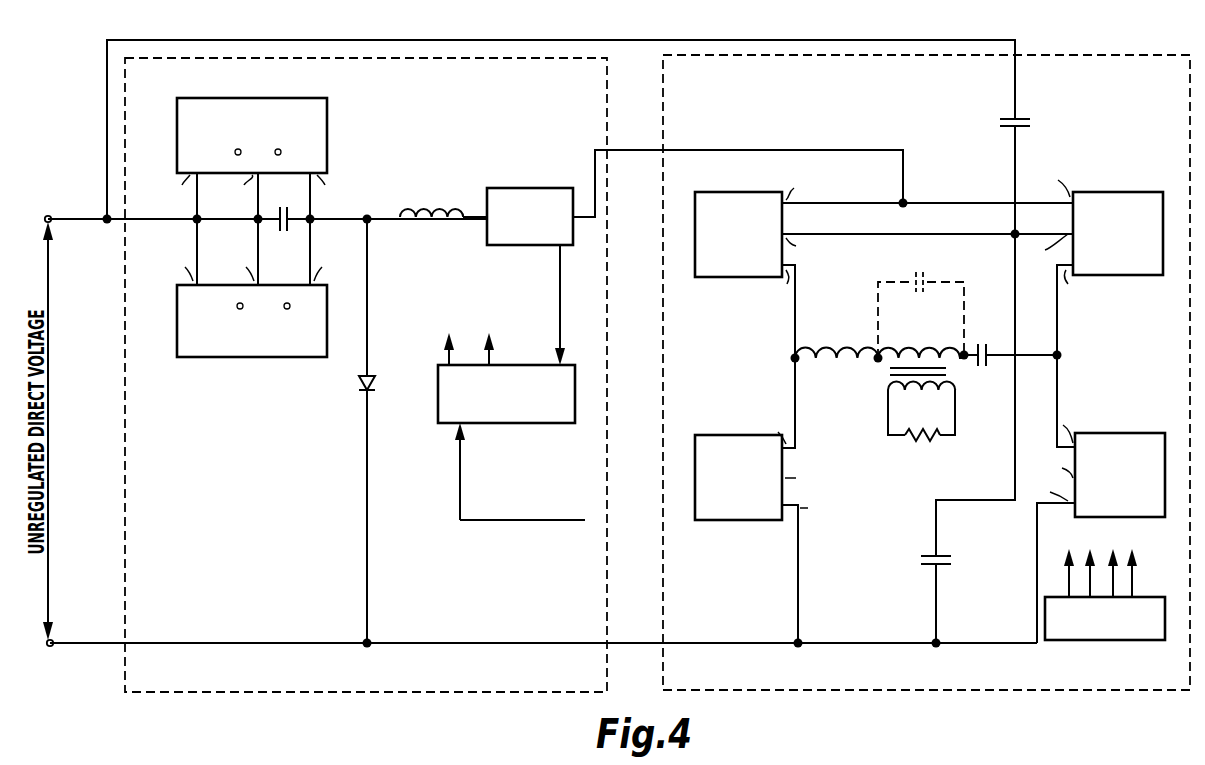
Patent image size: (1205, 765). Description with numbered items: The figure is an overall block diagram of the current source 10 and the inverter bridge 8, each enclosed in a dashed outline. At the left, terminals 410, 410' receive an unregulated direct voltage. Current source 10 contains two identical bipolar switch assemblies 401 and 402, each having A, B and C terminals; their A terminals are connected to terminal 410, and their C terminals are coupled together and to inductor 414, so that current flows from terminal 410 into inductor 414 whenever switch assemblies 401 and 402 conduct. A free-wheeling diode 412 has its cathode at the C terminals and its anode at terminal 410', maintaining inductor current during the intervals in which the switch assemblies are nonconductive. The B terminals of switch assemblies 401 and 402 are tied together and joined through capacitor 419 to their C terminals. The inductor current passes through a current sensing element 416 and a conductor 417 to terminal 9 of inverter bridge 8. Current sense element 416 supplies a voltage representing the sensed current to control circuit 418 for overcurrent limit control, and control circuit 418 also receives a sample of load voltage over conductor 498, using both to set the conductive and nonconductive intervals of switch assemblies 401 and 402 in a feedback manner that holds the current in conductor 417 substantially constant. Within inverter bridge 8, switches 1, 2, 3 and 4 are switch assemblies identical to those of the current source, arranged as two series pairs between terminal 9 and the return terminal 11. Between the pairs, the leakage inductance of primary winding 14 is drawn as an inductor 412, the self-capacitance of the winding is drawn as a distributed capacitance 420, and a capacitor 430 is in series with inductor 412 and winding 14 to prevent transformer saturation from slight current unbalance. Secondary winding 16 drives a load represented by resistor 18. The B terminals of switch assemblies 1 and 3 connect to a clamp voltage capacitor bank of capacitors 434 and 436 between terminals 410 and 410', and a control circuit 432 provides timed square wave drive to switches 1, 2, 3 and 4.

The inverter bridge 8 is at (926, 372).
The current source 10 is at (366, 375).
The terminal 410 is at (55, 402).
The terminal 410' is at (73, 653).
The bipolar switch assembly 401 is at (327, 132).
The bipolar switch assembly 402 is at (298, 358).
The capacitor 419 is at (285, 232).
The free-wheeling diode / leakage inductance 412 is at (377, 385).
The inductor 414 is at (432, 220).
The current sensing element 416 is at (542, 246).
The conductor 417 is at (639, 148).
The control circuit 418 is at (541, 424).
The conductor 498 is at (458, 477).
The switch 1 is at (694, 256).
The switch 2 is at (753, 521).
The switch 3 is at (1132, 276).
The switch 4 is at (1150, 518).
The terminal 9 is at (905, 200).
The terminal 11 is at (801, 640).
The primary winding 14 is at (933, 353).
The secondary winding 16 is at (937, 401).
The resistor 18 is at (936, 441).
The distributed capacitance 420 is at (923, 277).
The capacitor 430 is at (987, 367).
The capacitor 434 is at (918, 560).
The capacitor 436 is at (1031, 122).
The control circuit 432 is at (1113, 641).